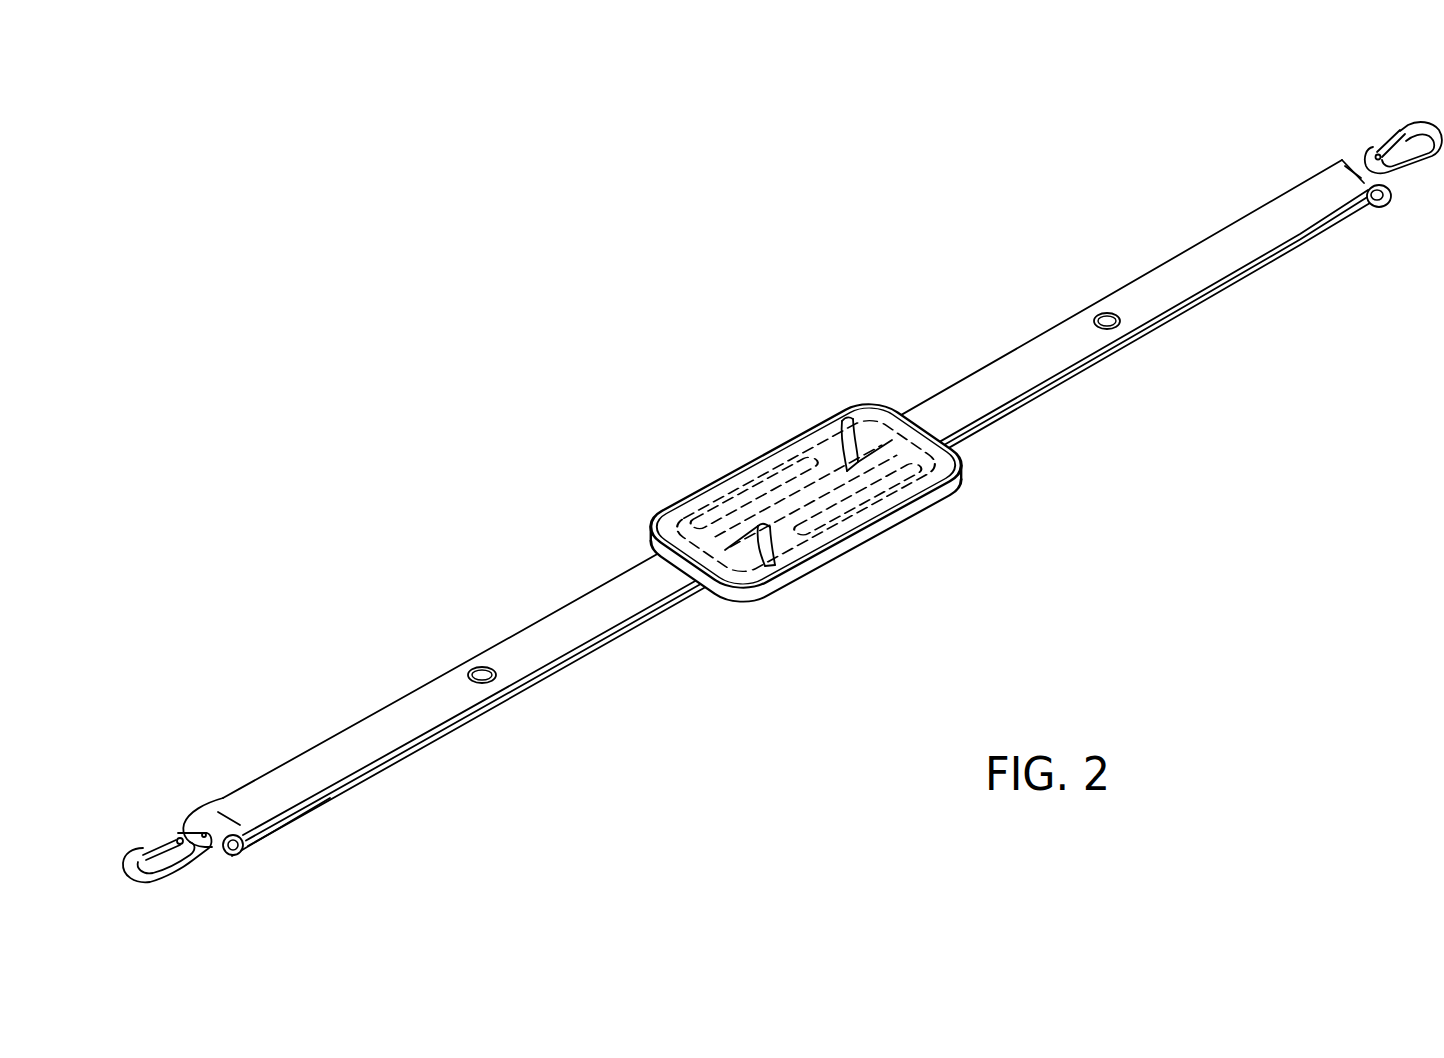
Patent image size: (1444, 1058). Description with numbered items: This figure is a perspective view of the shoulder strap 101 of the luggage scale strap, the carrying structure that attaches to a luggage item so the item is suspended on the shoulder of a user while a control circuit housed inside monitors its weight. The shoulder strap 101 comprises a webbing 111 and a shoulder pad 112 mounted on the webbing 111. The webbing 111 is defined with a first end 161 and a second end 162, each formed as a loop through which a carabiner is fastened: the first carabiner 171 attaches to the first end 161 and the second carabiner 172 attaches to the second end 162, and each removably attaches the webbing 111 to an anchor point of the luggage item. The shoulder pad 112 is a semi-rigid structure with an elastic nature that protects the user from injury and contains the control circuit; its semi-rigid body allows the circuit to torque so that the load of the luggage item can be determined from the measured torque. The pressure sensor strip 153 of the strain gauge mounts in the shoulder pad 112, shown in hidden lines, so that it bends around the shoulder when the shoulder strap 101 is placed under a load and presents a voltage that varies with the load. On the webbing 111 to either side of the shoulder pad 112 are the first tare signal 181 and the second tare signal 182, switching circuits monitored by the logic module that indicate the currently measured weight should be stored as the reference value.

The shoulder strap 101 is at (428, 453).
The webbing 111 is at (572, 636).
The shoulder pad 112 is at (767, 596).
The pressure sensor strip 153 is at (797, 485).
The first end 161 is at (242, 858).
The second end 162 is at (1347, 222).
The first carabiner 171 is at (178, 882).
The second carabiner 172 is at (1417, 127).
The first tare signal 181 is at (482, 667).
The second tare signal 182 is at (1106, 313).